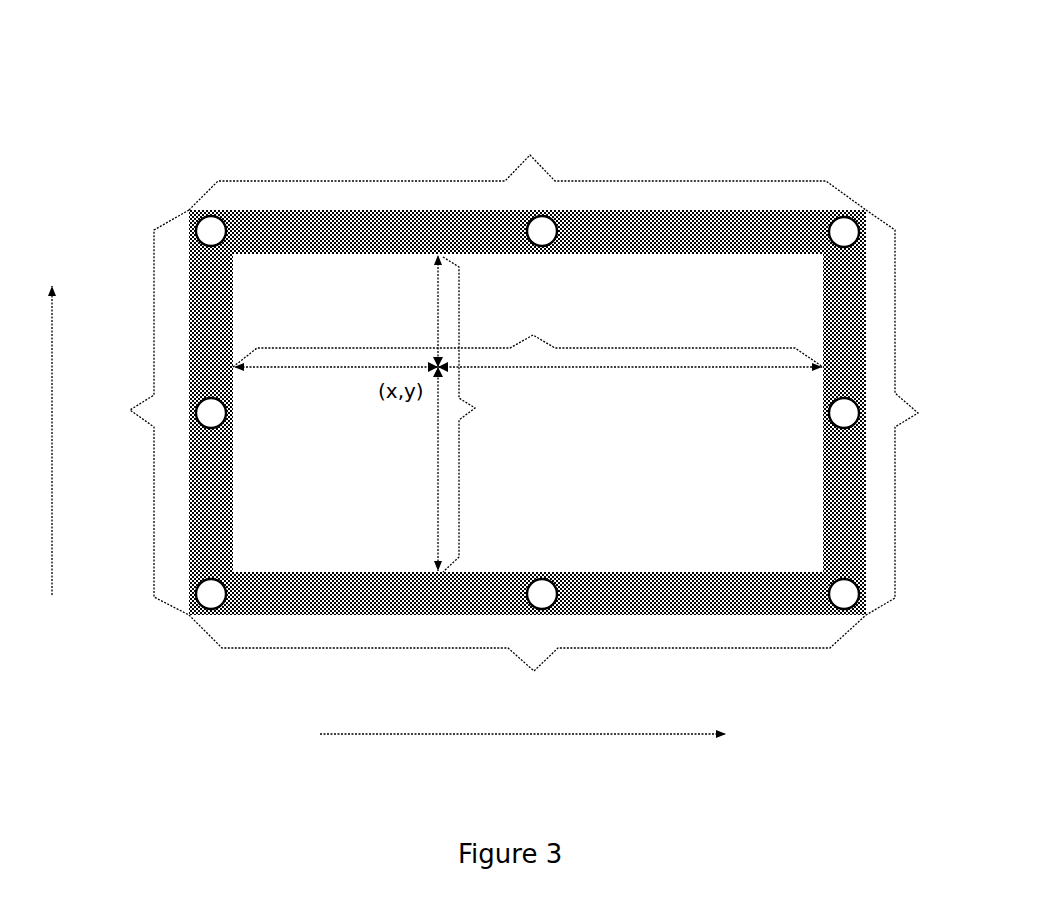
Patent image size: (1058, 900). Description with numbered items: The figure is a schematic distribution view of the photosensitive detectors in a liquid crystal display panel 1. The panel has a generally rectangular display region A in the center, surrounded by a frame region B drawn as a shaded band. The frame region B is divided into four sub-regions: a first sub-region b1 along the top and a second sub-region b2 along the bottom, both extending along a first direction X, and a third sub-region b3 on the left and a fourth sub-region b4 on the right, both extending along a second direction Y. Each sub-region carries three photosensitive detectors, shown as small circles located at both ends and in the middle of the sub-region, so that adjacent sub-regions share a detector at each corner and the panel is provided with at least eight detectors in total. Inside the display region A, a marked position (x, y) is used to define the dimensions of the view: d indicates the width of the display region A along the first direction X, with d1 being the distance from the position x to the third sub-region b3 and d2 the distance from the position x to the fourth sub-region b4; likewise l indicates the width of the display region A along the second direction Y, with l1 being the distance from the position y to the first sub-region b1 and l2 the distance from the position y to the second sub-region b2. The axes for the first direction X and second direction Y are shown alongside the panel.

The liquid crystal display panel 1 is at (532, 317).
The display region A is at (767, 290).
The frame region B is at (287, 210).
The first sub-region b1 is at (527, 167).
The second sub-region b2 is at (527, 662).
The third sub-region b3 is at (140, 412).
The fourth sub-region b4 is at (910, 412).
The width of the display region along the first direction d is at (528, 337).
The distance from position x to the third sub-region d1 is at (335, 372).
The distance from position x to the fourth sub-region d2 is at (630, 372).
The width of the display region along the second direction l is at (477, 414).
The distance from position y to the first sub-region l1 is at (452, 311).
The distance from position y to the second sub-region l2 is at (452, 469).
The first direction X is at (533, 734).
The second direction Y is at (50, 421).